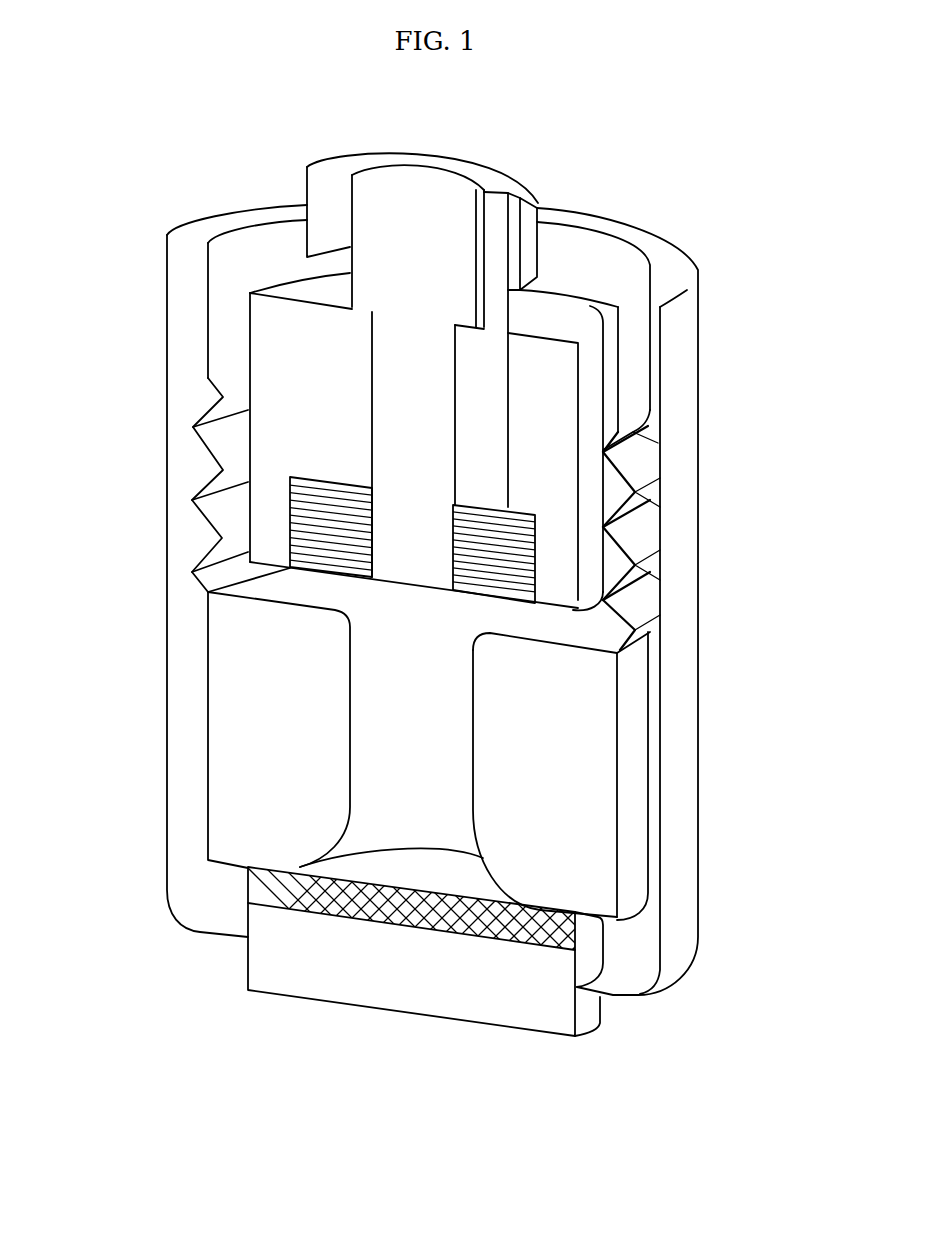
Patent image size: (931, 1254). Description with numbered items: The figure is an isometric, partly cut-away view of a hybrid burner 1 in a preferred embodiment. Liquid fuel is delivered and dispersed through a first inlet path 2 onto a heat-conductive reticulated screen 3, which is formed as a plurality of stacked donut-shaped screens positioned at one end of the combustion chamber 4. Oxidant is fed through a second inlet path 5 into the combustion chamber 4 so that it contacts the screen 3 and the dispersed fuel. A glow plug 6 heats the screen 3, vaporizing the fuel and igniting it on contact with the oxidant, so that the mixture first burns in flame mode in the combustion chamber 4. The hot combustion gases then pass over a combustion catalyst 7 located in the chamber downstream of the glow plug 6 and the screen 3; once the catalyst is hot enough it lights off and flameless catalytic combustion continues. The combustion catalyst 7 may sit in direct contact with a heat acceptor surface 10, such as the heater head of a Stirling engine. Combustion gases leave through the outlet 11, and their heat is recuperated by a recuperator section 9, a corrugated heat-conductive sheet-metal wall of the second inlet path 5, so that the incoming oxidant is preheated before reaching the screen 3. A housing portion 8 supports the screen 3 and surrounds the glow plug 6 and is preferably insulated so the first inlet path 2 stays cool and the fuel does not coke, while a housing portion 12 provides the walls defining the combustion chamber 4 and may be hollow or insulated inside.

The hybrid burner 1 is at (640, 195).
The first inlet path 2 is at (495, 235).
The heat-conductive reticulated screen 3 is at (487, 533).
The combustion chamber 4 is at (410, 748).
The second inlet path 5 is at (232, 343).
The glow plug 6 is at (410, 533).
The combustion catalyst 7 is at (287, 885).
The housing portion 8 is at (532, 407).
The recuperator section 9 is at (625, 470).
The heat acceptor surface 10 is at (365, 968).
The outlet 11 is at (200, 468).
The housing portion 12 is at (543, 733).